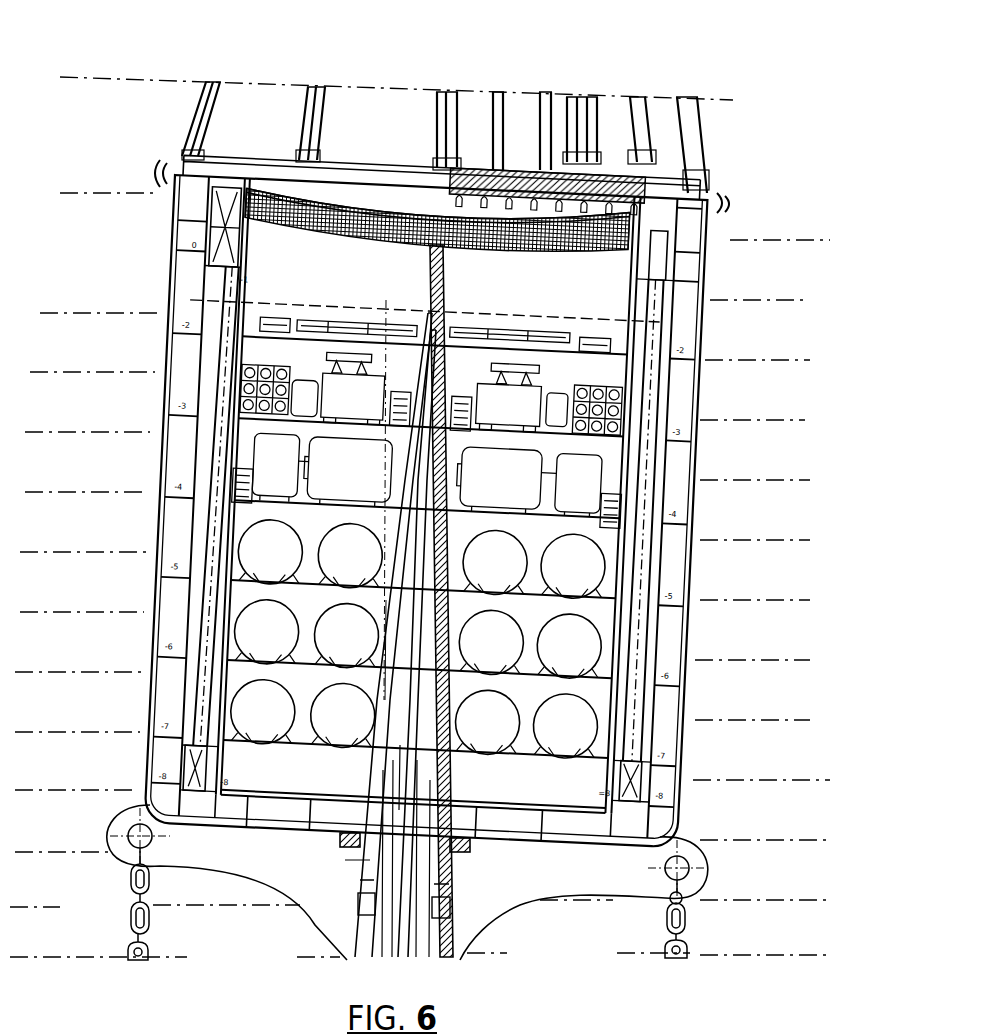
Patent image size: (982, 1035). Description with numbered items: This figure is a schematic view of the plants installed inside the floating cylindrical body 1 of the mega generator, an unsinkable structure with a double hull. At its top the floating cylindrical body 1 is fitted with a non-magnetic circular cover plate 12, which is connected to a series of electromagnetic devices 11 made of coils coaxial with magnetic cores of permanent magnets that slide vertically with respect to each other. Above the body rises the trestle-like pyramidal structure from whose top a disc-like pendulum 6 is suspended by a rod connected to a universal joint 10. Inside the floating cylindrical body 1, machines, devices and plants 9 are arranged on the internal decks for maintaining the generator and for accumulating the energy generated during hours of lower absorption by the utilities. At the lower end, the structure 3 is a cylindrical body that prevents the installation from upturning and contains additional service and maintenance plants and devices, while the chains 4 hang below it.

The floating cylindrical body 1 is at (153, 251).
The structure applied to the lower end of the floating body 3 is at (310, 913).
The anchor chain 4 is at (118, 915).
The disc-like pendulum 6 is at (520, 188).
The machines, devices and plants 9 is at (595, 565).
The universal joint 10 is at (404, 899).
The electromagnetic devices 11 is at (363, 208).
The non-magnetic circular cover plate 12 is at (330, 198).